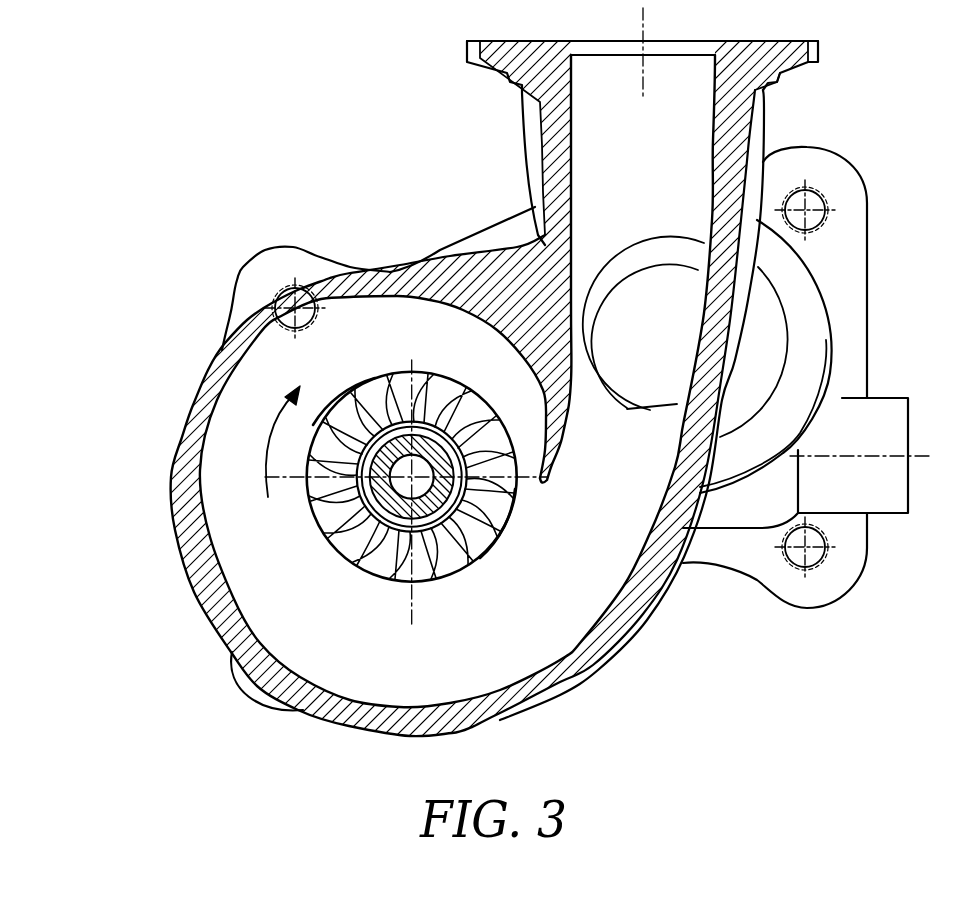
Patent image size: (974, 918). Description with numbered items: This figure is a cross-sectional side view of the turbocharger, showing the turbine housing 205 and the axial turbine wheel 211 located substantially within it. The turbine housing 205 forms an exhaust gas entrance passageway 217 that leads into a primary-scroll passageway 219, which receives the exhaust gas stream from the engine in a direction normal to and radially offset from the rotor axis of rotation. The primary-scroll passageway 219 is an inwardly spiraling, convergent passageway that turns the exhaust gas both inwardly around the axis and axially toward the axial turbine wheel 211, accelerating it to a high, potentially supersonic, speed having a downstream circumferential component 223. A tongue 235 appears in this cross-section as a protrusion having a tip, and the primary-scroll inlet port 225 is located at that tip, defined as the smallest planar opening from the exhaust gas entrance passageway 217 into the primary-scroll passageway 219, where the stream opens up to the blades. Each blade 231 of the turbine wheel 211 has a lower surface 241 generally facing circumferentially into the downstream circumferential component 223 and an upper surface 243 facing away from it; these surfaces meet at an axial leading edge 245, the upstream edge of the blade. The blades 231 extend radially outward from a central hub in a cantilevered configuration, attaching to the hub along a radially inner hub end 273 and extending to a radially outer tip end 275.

The turbine housing 205 is at (856, 215).
The axial turbine wheel 211 is at (317, 505).
The exhaust gas entrance passageway 217 is at (650, 452).
The primary-scroll passageway 219 is at (570, 577).
The downstream circumferential component 223 is at (268, 458).
The primary-scroll inlet port 225 is at (603, 528).
The blade 231 is at (383, 578).
The tongue 235 is at (548, 475).
The lower surface 241 is at (347, 412).
The upper surface 243 is at (388, 387).
The axial leading edge 245 is at (352, 392).
The hub end 273 is at (460, 503).
The tip end 275 is at (497, 534).